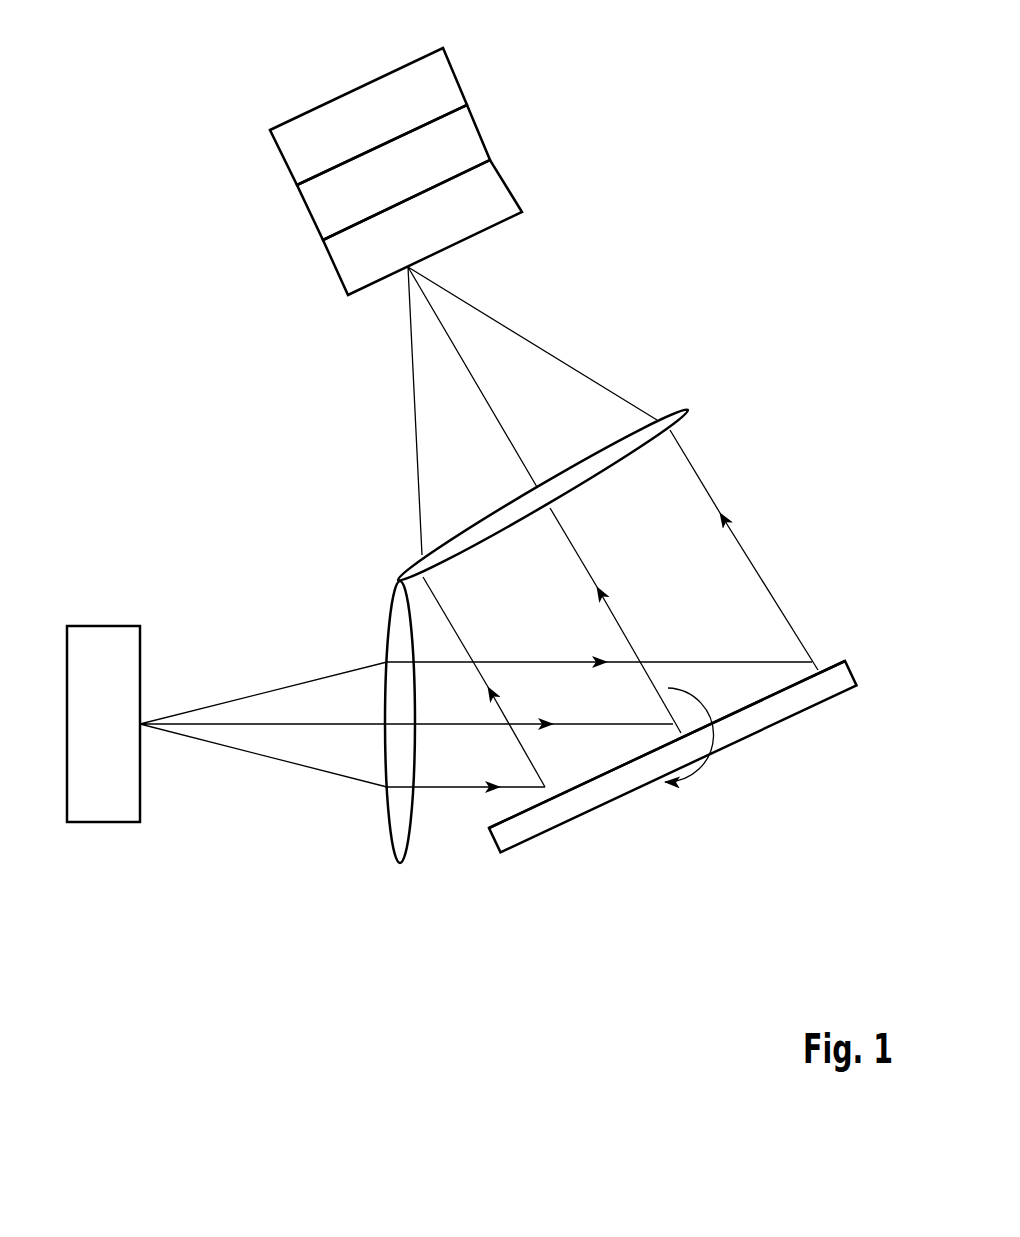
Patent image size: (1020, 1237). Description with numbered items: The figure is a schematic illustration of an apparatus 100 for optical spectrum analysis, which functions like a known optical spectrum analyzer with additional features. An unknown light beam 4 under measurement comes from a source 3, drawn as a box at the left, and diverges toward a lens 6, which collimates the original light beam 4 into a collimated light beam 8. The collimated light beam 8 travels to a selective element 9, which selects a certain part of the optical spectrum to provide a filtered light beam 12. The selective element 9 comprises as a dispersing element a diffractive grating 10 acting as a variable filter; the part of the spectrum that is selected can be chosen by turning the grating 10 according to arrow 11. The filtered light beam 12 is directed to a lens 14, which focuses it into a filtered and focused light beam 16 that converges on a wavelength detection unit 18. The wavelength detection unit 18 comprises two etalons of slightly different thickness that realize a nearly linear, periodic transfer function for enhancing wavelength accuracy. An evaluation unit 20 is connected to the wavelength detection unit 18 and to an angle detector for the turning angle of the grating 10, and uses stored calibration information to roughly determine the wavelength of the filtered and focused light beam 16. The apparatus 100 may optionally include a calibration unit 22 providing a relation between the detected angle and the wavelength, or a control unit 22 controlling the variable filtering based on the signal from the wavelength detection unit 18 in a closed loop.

The apparatus 100 is at (230, 337).
The source 3 is at (97, 807).
The light beam 4 is at (277, 768).
The lens 6 is at (395, 848).
The collimated light beam 8 is at (452, 797).
The selective element 9 is at (550, 848).
The diffractive grating 10 is at (823, 660).
The arrow 11 is at (692, 782).
The filtered light beam 12 is at (723, 465).
The lens 14 is at (688, 410).
The filtered and focused light beam 16 is at (553, 343).
The wavelength detection unit 18 is at (490, 197).
The evaluation unit 20 is at (468, 142).
The calibration unit 22 is at (447, 87).